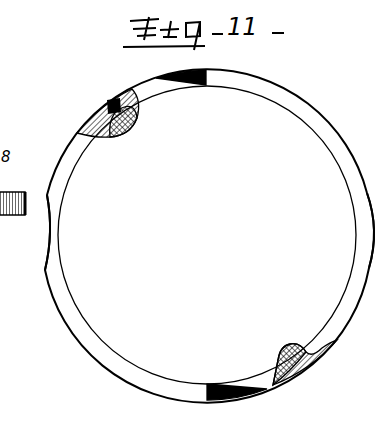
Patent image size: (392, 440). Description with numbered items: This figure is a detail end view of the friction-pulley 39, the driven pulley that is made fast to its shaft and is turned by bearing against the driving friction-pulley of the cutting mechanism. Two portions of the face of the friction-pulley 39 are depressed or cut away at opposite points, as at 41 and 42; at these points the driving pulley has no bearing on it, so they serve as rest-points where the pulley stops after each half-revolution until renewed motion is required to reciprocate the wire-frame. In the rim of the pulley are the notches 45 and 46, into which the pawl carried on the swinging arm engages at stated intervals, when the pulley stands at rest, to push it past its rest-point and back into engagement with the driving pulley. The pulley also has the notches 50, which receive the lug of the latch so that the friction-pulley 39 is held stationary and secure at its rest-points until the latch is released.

The friction-pulley 39 is at (77, 337).
The depressed face portion 41 is at (48, 233).
The depressed face portion 42 is at (373, 235).
The notch 45 is at (253, 50).
The notch 46 is at (230, 394).
The notches 50 is at (112, 102).